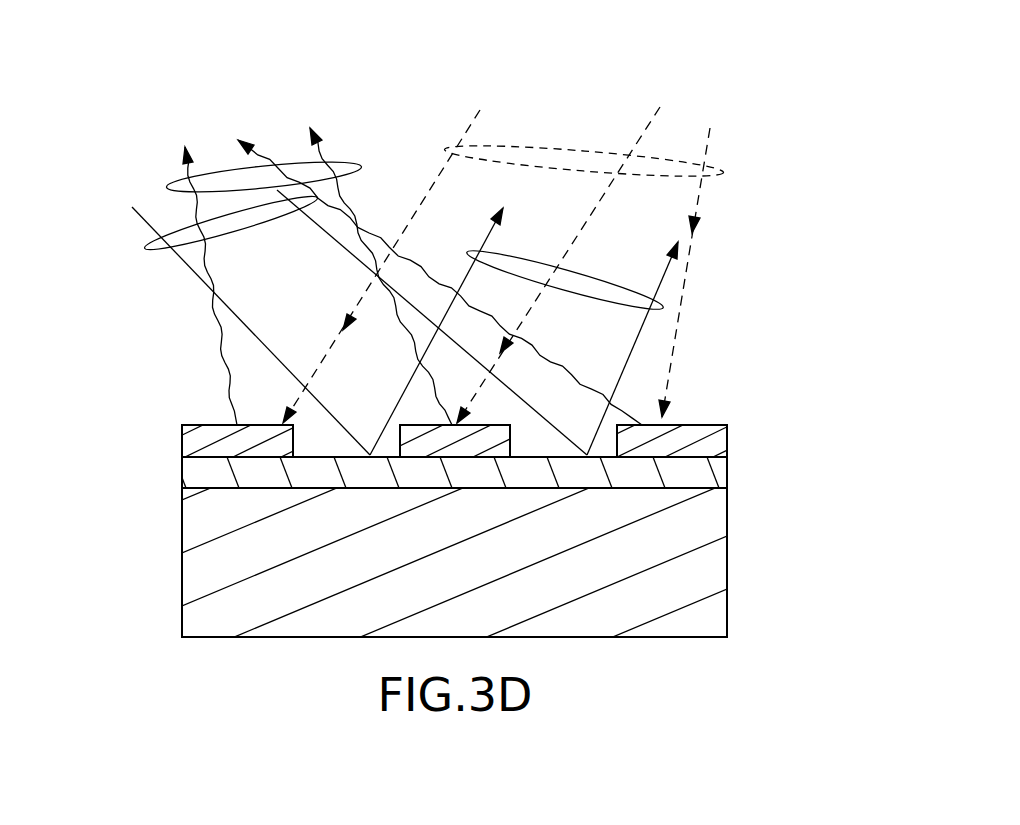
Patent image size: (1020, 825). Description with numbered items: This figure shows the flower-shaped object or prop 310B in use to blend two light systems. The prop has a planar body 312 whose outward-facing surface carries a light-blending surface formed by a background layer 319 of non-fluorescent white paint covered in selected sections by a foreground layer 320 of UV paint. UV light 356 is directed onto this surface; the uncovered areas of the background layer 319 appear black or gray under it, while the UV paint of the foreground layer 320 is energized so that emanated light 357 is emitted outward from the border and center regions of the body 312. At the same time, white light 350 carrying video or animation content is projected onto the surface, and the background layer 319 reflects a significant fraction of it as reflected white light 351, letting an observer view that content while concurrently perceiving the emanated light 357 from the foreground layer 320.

The object/prop 310B is at (700, 72).
The body 312 is at (752, 574).
The background layer 319 is at (160, 478).
The foreground layer 320 is at (160, 440).
The white light 350 is at (155, 250).
The reflected white light 351 is at (663, 307).
The UV light 356 is at (562, 150).
The emanated light 357 is at (167, 187).